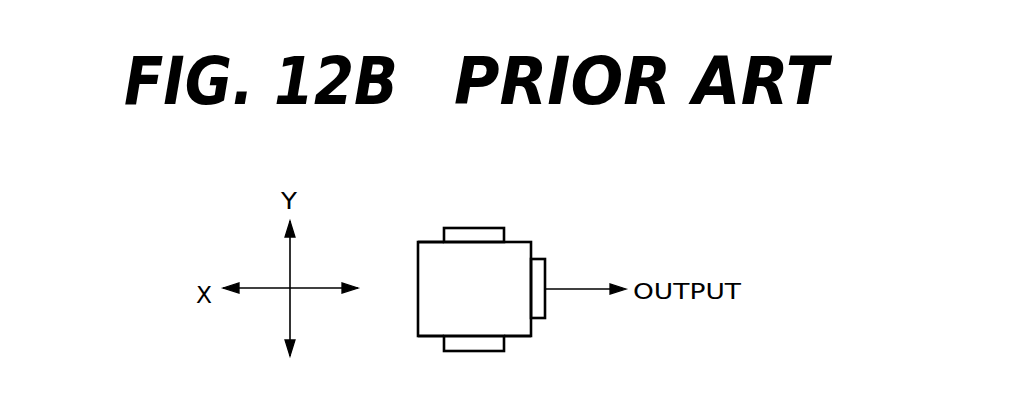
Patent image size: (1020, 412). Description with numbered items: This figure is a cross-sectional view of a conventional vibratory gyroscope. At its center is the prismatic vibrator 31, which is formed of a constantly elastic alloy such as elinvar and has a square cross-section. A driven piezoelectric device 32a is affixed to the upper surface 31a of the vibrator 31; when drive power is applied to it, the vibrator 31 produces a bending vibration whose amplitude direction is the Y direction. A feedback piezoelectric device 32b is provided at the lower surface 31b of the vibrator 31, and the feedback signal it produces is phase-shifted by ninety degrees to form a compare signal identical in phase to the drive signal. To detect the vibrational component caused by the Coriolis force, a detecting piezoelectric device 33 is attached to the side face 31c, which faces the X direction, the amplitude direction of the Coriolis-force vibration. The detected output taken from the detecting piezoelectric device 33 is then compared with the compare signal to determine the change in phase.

The prismatic vibrator 31 is at (520, 238).
The upper surface 31a is at (433, 240).
The lower surface 31b is at (432, 338).
The side face 31c is at (532, 325).
The driven piezoelectric device 32a is at (483, 227).
The feedback piezoelectric device 32b is at (462, 350).
The detecting piezoelectric device 33 is at (545, 273).